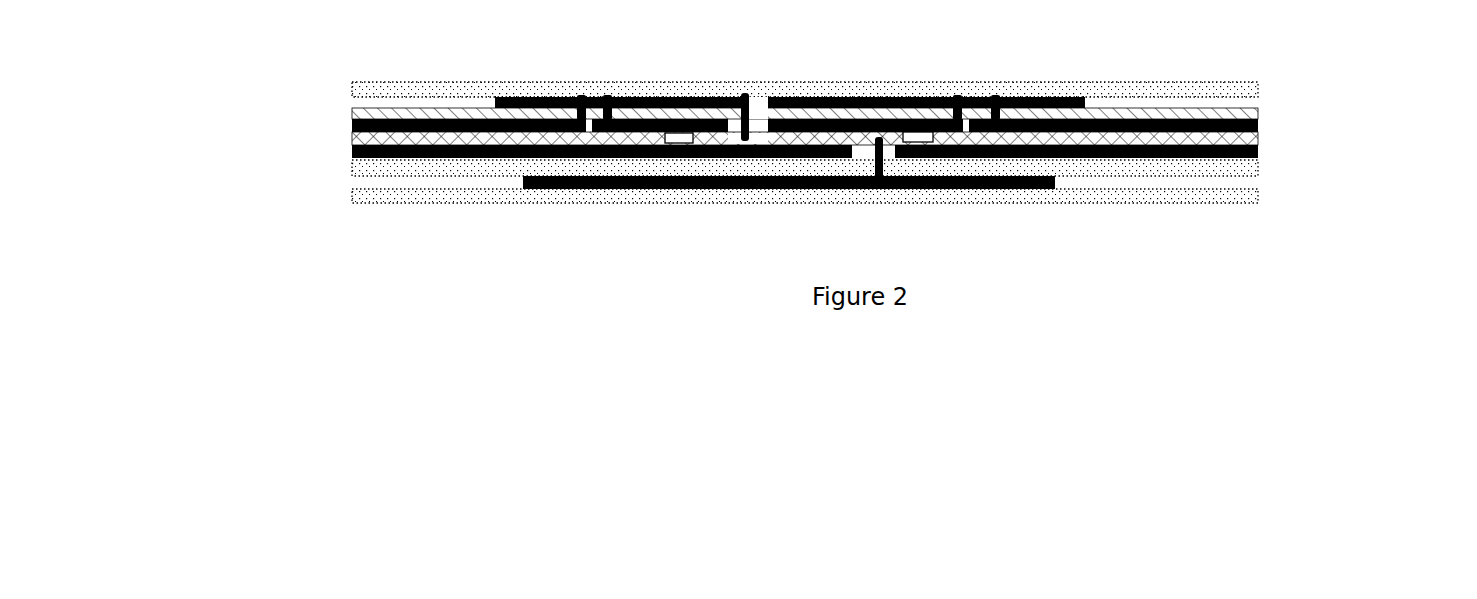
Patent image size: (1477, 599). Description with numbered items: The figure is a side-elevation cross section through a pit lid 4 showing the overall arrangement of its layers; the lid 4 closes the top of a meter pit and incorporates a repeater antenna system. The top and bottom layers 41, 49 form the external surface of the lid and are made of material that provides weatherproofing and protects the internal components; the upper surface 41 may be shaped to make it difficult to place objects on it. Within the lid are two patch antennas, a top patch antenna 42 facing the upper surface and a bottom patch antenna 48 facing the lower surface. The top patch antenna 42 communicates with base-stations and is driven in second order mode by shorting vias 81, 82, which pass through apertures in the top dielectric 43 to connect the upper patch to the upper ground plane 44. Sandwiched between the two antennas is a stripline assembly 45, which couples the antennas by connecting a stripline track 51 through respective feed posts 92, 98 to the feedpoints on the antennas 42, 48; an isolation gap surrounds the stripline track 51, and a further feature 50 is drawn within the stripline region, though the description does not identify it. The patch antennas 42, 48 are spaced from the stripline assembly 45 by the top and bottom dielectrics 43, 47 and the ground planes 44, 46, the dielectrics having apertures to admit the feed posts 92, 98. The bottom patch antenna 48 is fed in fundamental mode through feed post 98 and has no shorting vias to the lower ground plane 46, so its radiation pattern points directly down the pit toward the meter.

The lid 4 is at (805, 195).
The top layer 41 is at (811, 71).
The top patch antenna 42 is at (622, 98).
The top dielectric 43 is at (347, 107).
The upper ground plane 44 is at (328, 127).
The stripline assembly 45 is at (1272, 140).
The lower ground plane 46 is at (328, 152).
The bottom dielectric 47 is at (347, 170).
The bottom patch antenna 48 is at (657, 182).
The bottom layer 49 is at (811, 211).
The slot 50 is at (668, 133).
The stripline track 51 is at (773, 137).
The shorting via 81 is at (952, 108).
The shorting via 82 is at (1000, 112).
The feed post 92 is at (742, 95).
The feed post 98 is at (888, 170).